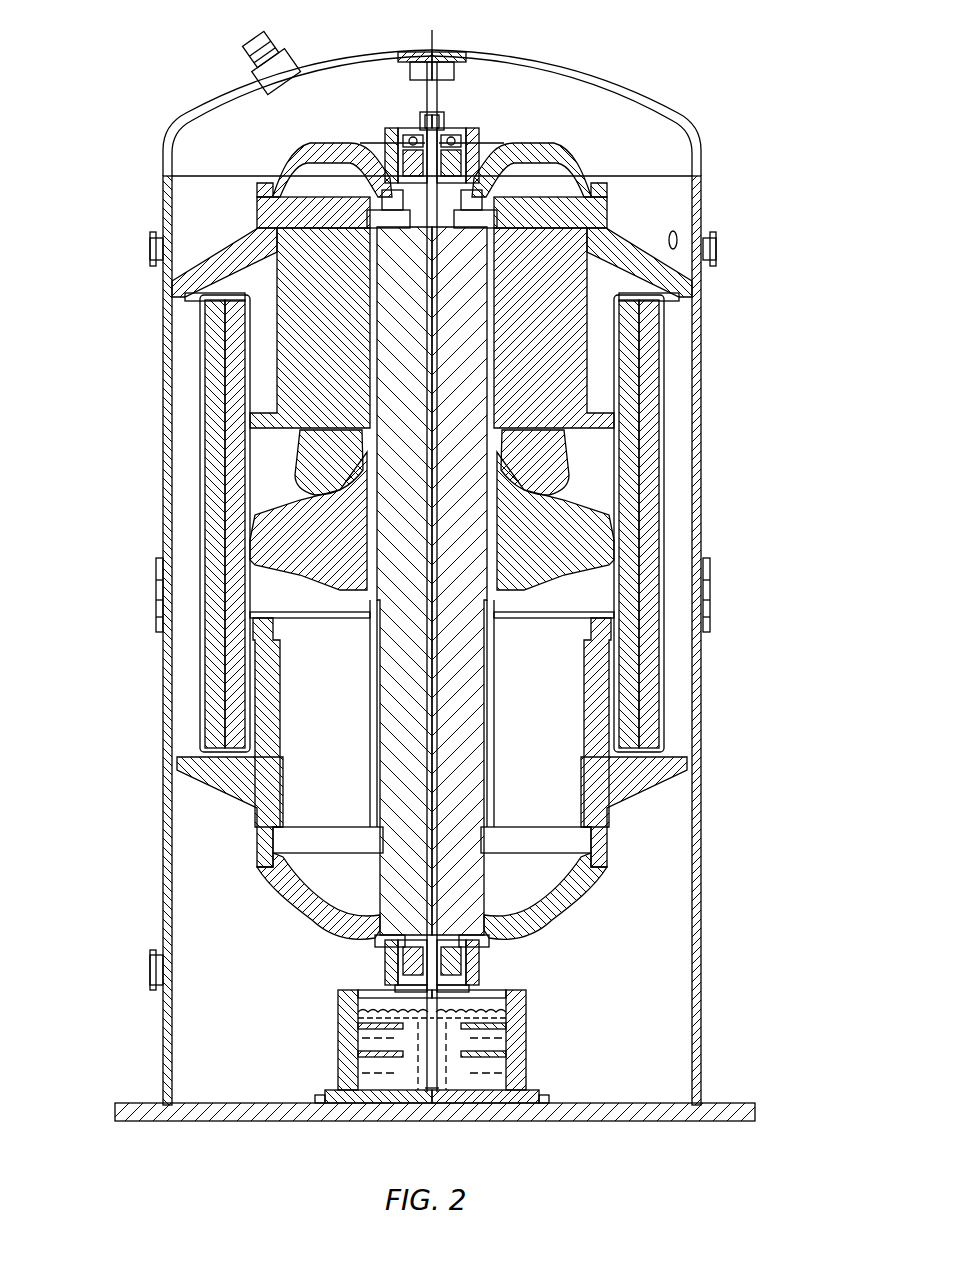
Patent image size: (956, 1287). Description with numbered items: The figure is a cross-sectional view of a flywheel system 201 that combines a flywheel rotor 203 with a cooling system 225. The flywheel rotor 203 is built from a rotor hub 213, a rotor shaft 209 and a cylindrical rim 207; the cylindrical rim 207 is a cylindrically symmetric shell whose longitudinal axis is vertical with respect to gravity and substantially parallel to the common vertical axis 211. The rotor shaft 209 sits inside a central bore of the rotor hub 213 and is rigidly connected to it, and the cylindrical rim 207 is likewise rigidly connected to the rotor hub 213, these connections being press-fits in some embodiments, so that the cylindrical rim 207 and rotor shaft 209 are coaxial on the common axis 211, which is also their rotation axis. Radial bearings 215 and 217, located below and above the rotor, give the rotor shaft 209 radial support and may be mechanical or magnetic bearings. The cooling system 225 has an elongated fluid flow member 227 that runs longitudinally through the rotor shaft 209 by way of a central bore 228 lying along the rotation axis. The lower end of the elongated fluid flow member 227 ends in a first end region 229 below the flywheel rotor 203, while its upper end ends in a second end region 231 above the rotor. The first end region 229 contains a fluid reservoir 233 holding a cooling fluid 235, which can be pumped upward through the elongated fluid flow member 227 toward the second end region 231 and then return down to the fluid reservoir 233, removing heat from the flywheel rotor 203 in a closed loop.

The flywheel system 201 is at (150, 108).
The flywheel rotor 203 is at (290, 594).
The cylindrical rim 207 is at (330, 503).
The rotor shaft 209 is at (400, 527).
The common vertical axis 211 is at (435, 1126).
The rotor hub 213 is at (340, 568).
The radial bearing 215 is at (372, 957).
The radial bearing 217 is at (400, 160).
The cooling system 225 is at (610, 980).
The elongated fluid flow member 227 is at (628, 520).
The central bore 228 is at (620, 565).
The first end region 229 is at (602, 1008).
The second end region 231 is at (458, 110).
The fluid reservoir 233 is at (537, 1053).
The cooling fluid 235 is at (395, 1078).